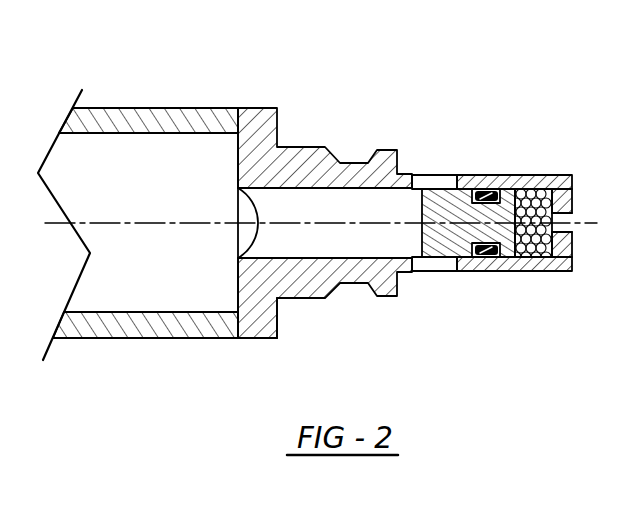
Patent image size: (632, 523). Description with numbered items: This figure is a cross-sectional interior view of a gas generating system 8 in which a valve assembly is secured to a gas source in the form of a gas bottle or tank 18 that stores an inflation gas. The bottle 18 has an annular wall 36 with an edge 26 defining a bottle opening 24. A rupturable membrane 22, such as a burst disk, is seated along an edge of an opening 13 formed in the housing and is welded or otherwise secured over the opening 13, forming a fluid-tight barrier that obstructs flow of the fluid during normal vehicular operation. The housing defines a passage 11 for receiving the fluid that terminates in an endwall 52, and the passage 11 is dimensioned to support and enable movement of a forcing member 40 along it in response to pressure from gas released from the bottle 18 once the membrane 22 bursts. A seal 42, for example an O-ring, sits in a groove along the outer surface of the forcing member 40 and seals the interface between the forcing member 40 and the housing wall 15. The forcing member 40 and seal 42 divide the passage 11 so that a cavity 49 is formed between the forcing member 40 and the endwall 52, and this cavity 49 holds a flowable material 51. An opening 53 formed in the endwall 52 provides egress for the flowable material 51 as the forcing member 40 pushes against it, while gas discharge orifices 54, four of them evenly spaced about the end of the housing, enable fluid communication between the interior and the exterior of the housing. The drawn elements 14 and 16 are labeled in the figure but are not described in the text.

The gas generating system 8 is at (48, 73).
The passage 11 is at (357, 247).
The opening 13 is at (268, 203).
The flange 14 is at (278, 313).
The housing wall 15 is at (332, 188).
The sleeve 16 is at (575, 175).
The gas bottle or tank 18 is at (69, 342).
The rupturable membrane 22 is at (238, 208).
The bottle opening 24 is at (237, 238).
The edge 26 is at (235, 327).
The annular wall 36 is at (97, 322).
The forcing member 40 is at (453, 238).
The seal 42 is at (483, 193).
The cavity 49 is at (535, 203).
The flowable material 51 is at (540, 245).
The endwall 52 is at (560, 248).
The opening 53 is at (564, 217).
The gas discharge orifices 54 is at (425, 180).